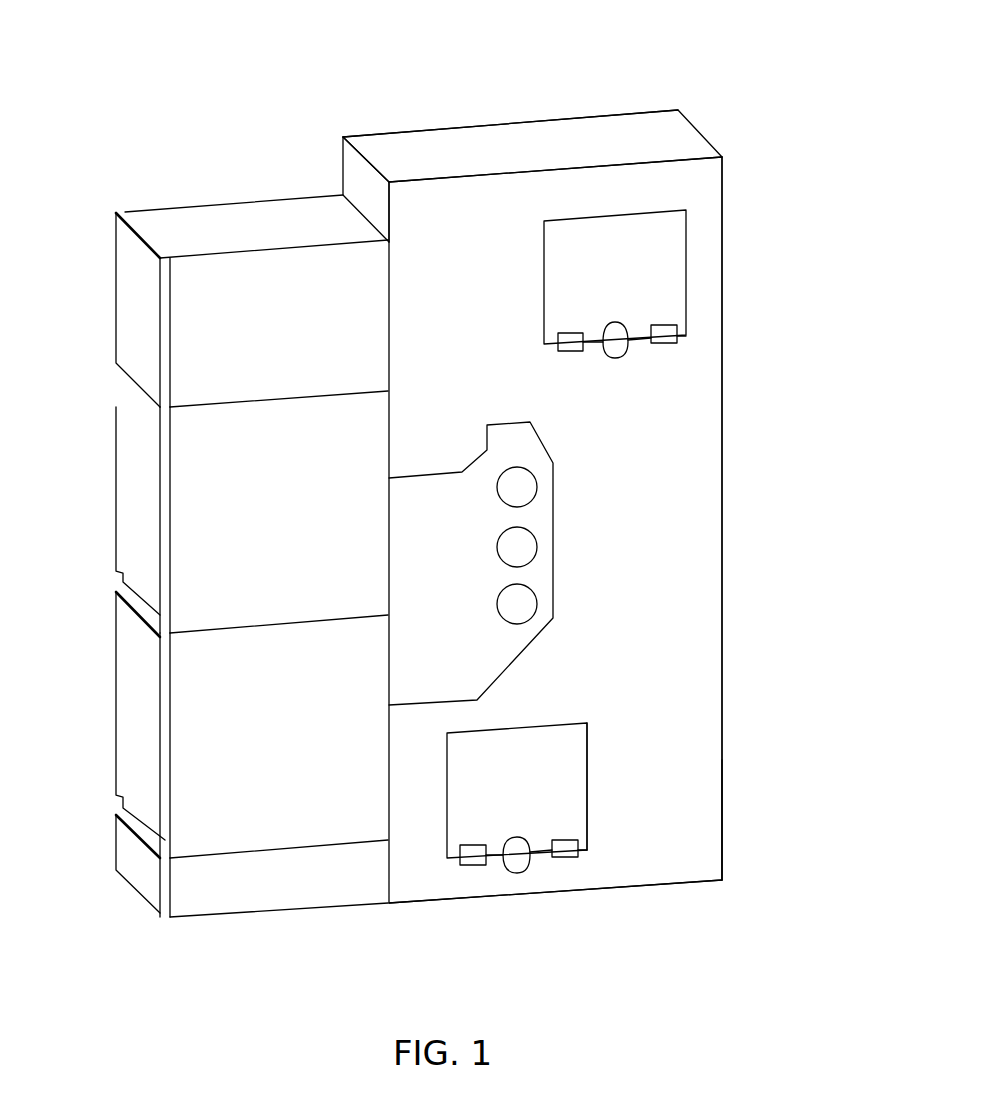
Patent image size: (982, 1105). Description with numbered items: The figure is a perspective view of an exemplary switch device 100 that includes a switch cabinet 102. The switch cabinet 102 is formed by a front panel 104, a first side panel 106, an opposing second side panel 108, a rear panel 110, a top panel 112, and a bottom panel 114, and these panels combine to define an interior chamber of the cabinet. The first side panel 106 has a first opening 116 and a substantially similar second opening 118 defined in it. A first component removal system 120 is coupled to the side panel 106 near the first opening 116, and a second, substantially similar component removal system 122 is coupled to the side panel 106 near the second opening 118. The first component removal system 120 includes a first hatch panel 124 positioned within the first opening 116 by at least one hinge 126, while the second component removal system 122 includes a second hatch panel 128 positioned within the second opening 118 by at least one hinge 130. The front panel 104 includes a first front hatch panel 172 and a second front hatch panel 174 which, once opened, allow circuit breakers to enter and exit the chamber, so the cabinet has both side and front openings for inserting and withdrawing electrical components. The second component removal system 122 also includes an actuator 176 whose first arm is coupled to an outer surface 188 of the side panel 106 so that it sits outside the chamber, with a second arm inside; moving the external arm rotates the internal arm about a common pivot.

The switch device 100 is at (185, 100).
The switch cabinet 102 is at (426, 113).
The front panel 104 is at (137, 482).
The first side panel 106 is at (697, 480).
The second side panel 108 is at (622, 113).
The rear panel 110 is at (704, 138).
The top panel 112 is at (490, 132).
The bottom panel 114 is at (686, 883).
The first opening 116 is at (544, 233).
The second opening 118 is at (590, 723).
The first component removal system 120 is at (702, 258).
The second component removal system 122 is at (458, 872).
The first hatch panel 124 is at (570, 285).
The hinge 126 is at (667, 345).
The second hatch panel 128 is at (572, 790).
The hinge 130 is at (560, 858).
The first front hatch panel 172 is at (137, 315).
The second front hatch panel 174 is at (137, 706).
The actuator 176 is at (518, 875).
The outer surface 188 is at (707, 788).